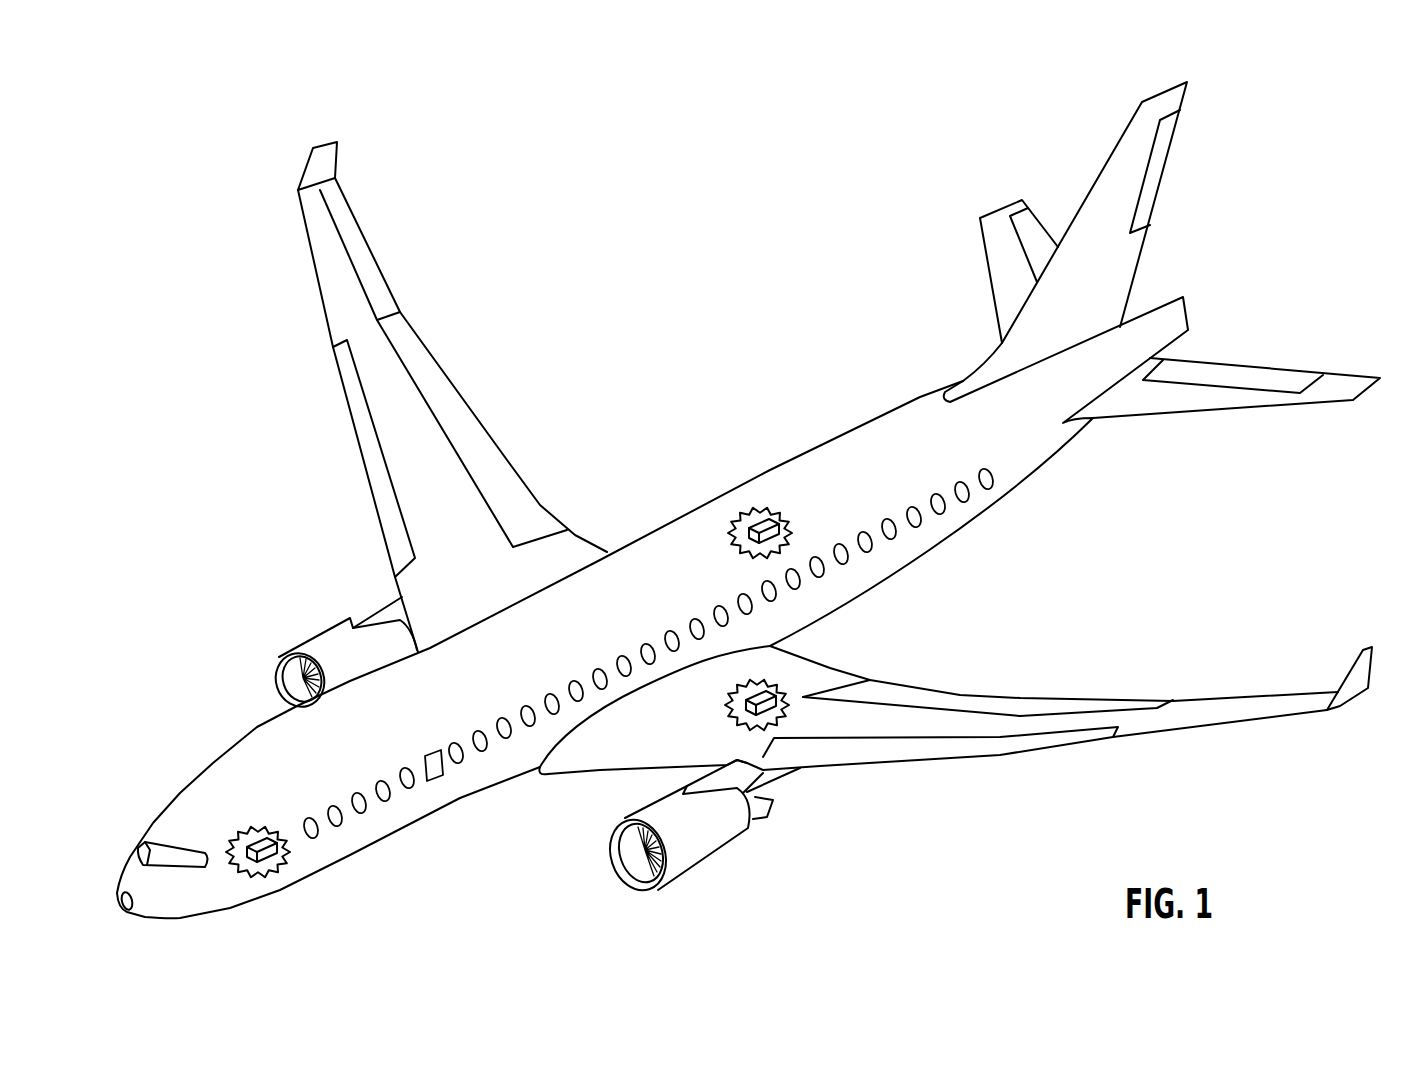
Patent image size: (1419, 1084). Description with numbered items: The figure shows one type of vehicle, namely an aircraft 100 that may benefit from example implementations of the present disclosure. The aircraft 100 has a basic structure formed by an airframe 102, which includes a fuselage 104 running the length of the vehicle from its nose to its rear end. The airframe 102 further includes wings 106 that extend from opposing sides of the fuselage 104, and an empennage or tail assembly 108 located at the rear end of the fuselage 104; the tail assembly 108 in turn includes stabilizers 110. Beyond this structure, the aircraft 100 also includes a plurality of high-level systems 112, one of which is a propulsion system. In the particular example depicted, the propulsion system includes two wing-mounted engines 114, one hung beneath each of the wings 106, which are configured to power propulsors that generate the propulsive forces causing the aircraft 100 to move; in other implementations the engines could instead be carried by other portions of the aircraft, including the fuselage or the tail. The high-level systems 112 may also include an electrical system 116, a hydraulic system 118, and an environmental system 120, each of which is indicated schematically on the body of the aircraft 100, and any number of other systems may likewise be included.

The aircraft 100 is at (636, 329).
The airframe 102 is at (256, 717).
The fuselage 104 is at (349, 852).
The wings 106 is at (322, 300).
The tail assembly 108 is at (890, 210).
The stabilizers 110 is at (1110, 158).
The high-level systems 112 is at (1038, 619).
The engines 114 is at (317, 627).
The electrical system 116 is at (247, 840).
The hydraulic system 118 is at (773, 694).
The environmental system 120 is at (755, 522).